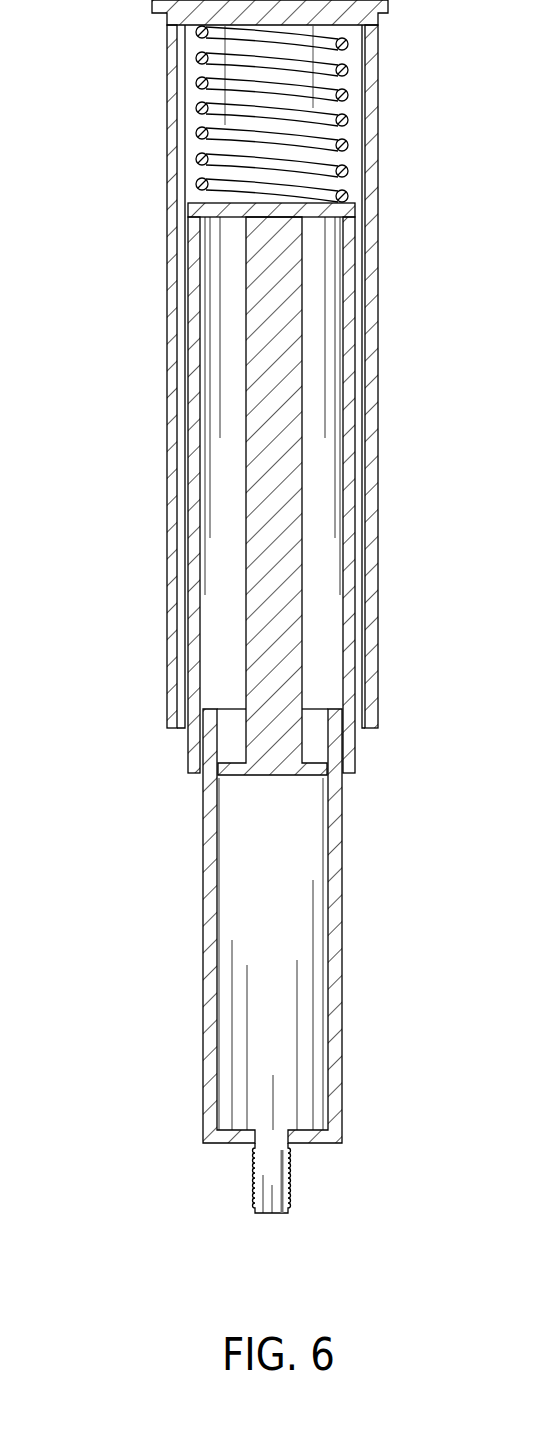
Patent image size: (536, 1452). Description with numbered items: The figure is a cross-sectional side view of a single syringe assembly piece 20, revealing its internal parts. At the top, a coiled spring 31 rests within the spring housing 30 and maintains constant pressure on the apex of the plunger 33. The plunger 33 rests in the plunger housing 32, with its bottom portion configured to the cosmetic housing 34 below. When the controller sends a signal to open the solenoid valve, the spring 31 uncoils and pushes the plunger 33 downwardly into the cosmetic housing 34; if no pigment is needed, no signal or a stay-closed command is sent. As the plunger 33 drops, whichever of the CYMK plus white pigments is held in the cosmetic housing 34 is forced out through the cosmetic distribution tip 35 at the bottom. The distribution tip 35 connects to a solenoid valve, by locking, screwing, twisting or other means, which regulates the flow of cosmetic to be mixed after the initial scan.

The single syringe assembly piece 20 is at (136, 43).
The spring housing 30 is at (177, 192).
The spring 31 is at (343, 143).
The plunger housing 32 is at (193, 747).
The plunger 33 is at (290, 660).
The cosmetic housing 34 is at (208, 993).
The cosmetic distribution tip 35 is at (287, 1187).